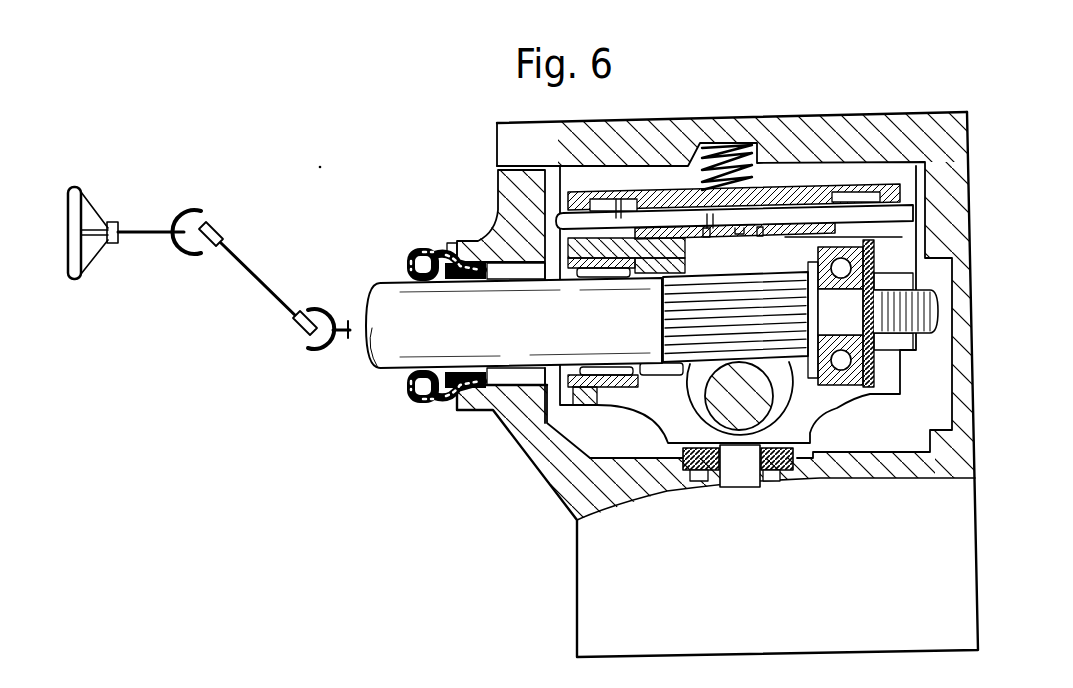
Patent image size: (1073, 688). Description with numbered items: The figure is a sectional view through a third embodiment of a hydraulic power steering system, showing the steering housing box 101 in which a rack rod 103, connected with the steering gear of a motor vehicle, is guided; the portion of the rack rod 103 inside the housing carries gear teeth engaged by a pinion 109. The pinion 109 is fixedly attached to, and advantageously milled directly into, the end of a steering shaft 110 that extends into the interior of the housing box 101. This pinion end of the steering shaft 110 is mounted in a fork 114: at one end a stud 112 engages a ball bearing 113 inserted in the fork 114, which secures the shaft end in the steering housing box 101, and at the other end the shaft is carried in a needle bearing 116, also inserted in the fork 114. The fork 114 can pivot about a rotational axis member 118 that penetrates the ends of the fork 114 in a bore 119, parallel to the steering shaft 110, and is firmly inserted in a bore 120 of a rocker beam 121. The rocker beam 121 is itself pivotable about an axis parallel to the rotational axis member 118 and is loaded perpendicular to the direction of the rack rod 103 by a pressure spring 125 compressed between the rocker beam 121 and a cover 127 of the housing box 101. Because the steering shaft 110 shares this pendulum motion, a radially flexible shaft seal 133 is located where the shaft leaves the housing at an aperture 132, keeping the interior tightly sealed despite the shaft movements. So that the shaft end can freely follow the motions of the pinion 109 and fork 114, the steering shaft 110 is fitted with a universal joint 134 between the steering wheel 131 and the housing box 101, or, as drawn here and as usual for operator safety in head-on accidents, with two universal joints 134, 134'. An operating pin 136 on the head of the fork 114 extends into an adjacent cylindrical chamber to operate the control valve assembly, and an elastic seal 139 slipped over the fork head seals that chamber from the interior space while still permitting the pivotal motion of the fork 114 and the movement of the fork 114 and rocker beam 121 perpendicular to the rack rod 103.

The steering housing box 101 is at (962, 192).
The rack rod 103 is at (722, 399).
The pinion 109 is at (708, 296).
The steering shaft 110 is at (518, 327).
The stud 112 is at (850, 325).
The ball bearing 113 is at (846, 370).
The fork 114 is at (810, 410).
The needle bearing 116 is at (600, 390).
The rotational axis member 118 is at (560, 220).
The bore 119 is at (618, 204).
The bore 120 is at (741, 224).
The rocker beam 121 is at (795, 199).
The pressure spring 125 is at (753, 160).
The cover 127 is at (962, 126).
The steering wheel 131 is at (75, 184).
The aperture 132 is at (508, 384).
The shaft seal 133 is at (418, 248).
The universal joint 134 is at (216, 229).
The universal joint 134' is at (316, 311).
The operating pin 136 is at (747, 472).
The elastic seal 139 is at (691, 485).